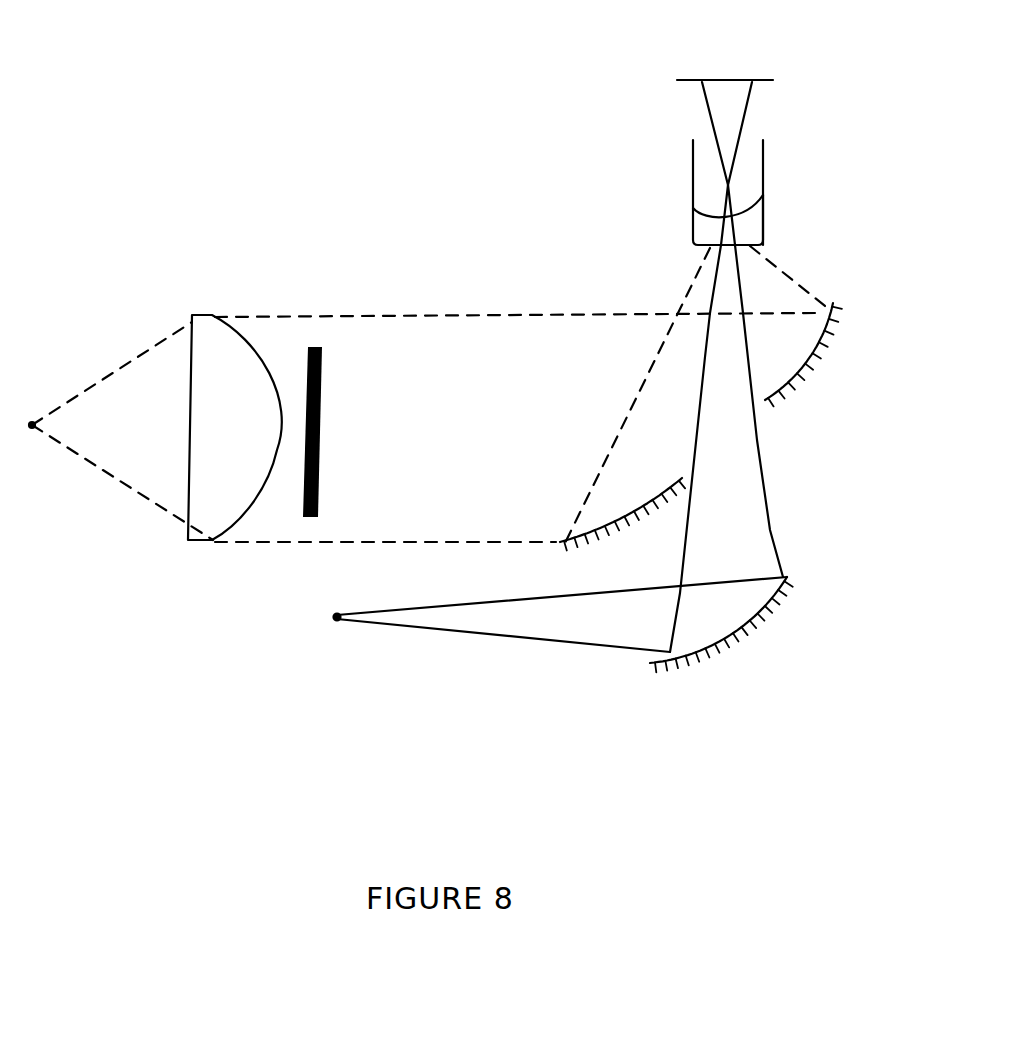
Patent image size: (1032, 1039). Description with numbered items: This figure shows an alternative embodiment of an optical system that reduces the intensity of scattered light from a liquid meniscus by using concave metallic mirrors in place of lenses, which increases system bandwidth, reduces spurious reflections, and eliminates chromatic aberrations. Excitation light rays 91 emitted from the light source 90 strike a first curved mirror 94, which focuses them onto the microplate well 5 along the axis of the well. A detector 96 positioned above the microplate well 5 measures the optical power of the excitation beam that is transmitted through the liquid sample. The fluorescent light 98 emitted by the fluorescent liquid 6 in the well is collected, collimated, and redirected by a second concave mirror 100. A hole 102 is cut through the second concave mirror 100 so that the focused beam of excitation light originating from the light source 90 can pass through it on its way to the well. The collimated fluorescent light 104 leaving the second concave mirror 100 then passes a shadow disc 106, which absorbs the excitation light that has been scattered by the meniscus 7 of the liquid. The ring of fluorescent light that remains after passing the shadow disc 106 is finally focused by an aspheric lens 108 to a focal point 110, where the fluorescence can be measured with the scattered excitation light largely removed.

The microplate well 5 is at (693, 163).
The fluorescent liquid 6 is at (700, 230).
The meniscus 7 is at (765, 220).
The light source 90 is at (337, 633).
The excitation light rays 91 is at (535, 638).
The first curved mirror 94 is at (712, 660).
The detector 96 is at (762, 73).
The fluorescent light 98 is at (800, 293).
The second concave mirror 100 is at (806, 360).
The hole 102 is at (733, 437).
The collimated fluorescent light 104 is at (393, 315).
The shadow disc 106 is at (318, 457).
The aspheric lens 108 is at (248, 337).
The focal point 110 is at (32, 402).